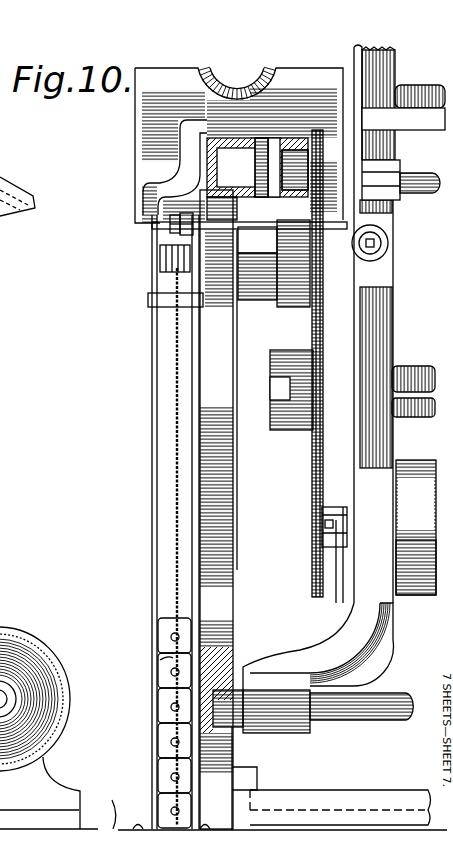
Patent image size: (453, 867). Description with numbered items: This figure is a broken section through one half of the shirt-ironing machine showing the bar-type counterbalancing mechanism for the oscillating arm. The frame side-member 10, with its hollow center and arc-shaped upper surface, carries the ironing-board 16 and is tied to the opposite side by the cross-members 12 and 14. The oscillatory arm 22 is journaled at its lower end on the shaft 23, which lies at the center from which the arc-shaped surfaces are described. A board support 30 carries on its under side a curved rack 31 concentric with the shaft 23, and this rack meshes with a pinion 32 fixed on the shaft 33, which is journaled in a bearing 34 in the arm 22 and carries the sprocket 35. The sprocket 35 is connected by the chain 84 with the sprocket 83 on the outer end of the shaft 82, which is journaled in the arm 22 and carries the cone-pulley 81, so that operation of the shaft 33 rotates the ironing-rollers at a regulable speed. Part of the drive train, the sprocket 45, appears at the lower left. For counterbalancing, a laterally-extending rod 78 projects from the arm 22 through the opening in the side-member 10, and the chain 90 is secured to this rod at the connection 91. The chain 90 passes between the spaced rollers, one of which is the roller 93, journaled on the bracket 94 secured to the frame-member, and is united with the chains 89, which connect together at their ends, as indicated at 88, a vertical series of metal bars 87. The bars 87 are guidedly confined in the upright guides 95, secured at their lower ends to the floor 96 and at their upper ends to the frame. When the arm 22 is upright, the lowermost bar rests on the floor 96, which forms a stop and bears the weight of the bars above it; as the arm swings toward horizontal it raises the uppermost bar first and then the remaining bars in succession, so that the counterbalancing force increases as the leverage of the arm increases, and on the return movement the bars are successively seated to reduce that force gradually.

The ironing-board 16 is at (157, 72).
The curved rack 31 is at (263, 140).
The board support 30 is at (285, 148).
The pinion 32 is at (257, 179).
The sprocket 35 is at (340, 158).
The bearing 34 is at (388, 168).
The shaft 33 is at (424, 183).
The oscillatory arm 22 is at (388, 272).
The bracket 94 is at (157, 188).
The chain connection 91 is at (170, 226).
The roller 93 is at (163, 263).
The laterally-extending rod 78 is at (253, 225).
The cross-member 12 is at (299, 386).
The chain 84 is at (313, 477).
The side-member 10 is at (222, 541).
The sprocket 83 is at (310, 553).
The upright guide 95 is at (196, 437).
The chain 90 is at (176, 486).
The shaft 82 is at (393, 523).
The cone-pulley 81 is at (418, 577).
The shaft 23 is at (385, 696).
The cross-member 14 is at (337, 802).
The sprocket 45 is at (17, 655).
The bar connection 88 is at (172, 638).
The metal bar 87 is at (164, 642).
The chain 89 is at (165, 714).
The floor 96 is at (112, 799).